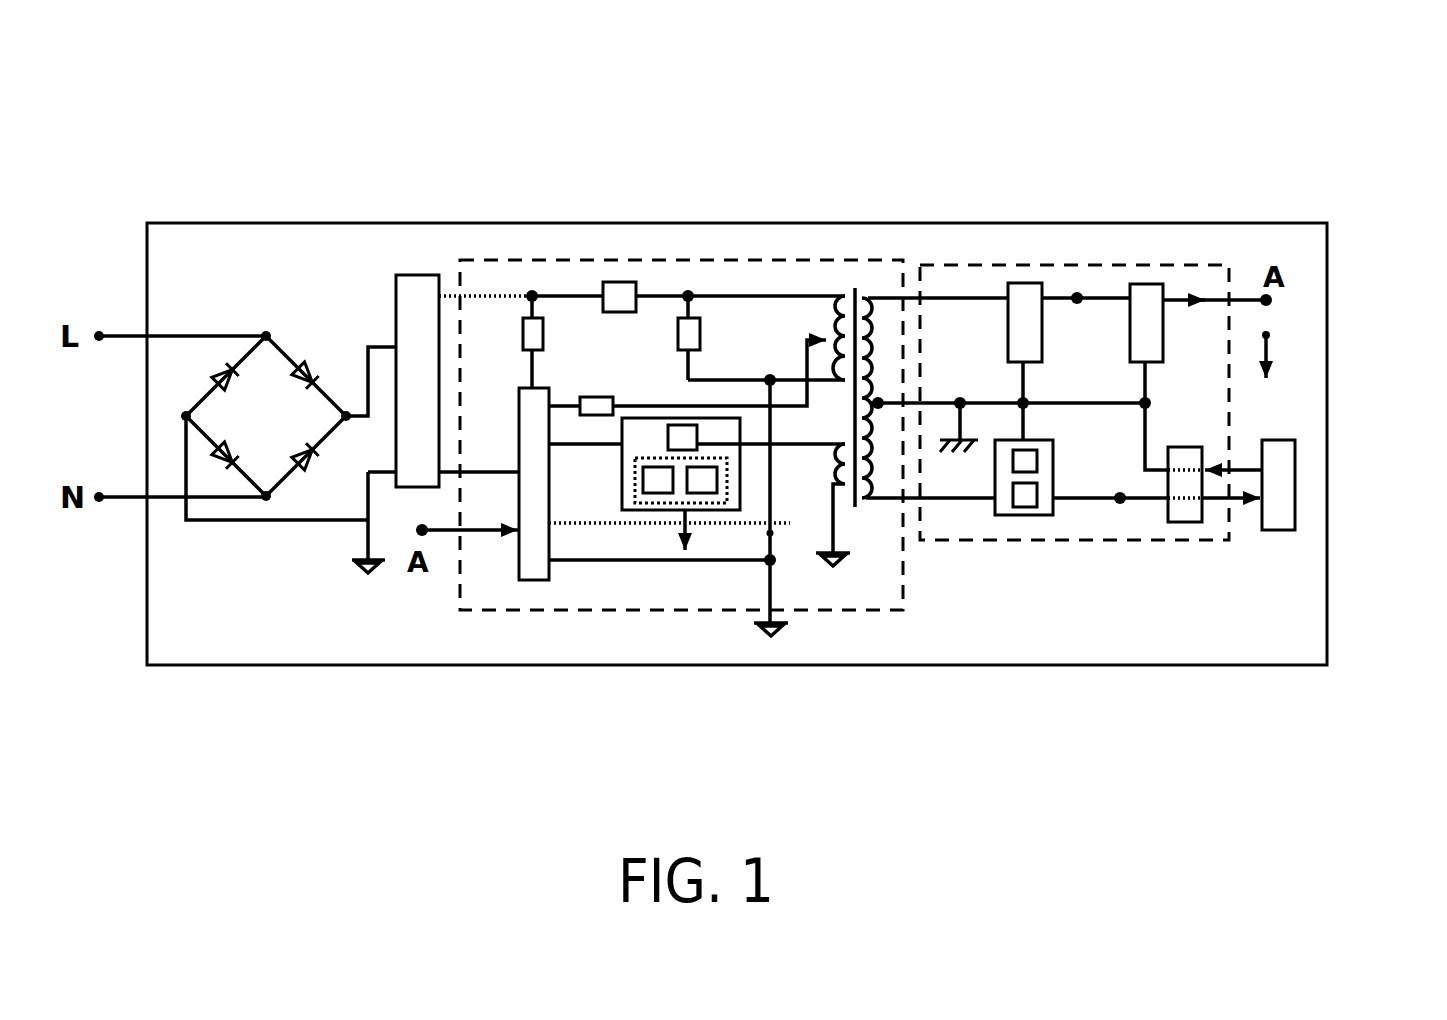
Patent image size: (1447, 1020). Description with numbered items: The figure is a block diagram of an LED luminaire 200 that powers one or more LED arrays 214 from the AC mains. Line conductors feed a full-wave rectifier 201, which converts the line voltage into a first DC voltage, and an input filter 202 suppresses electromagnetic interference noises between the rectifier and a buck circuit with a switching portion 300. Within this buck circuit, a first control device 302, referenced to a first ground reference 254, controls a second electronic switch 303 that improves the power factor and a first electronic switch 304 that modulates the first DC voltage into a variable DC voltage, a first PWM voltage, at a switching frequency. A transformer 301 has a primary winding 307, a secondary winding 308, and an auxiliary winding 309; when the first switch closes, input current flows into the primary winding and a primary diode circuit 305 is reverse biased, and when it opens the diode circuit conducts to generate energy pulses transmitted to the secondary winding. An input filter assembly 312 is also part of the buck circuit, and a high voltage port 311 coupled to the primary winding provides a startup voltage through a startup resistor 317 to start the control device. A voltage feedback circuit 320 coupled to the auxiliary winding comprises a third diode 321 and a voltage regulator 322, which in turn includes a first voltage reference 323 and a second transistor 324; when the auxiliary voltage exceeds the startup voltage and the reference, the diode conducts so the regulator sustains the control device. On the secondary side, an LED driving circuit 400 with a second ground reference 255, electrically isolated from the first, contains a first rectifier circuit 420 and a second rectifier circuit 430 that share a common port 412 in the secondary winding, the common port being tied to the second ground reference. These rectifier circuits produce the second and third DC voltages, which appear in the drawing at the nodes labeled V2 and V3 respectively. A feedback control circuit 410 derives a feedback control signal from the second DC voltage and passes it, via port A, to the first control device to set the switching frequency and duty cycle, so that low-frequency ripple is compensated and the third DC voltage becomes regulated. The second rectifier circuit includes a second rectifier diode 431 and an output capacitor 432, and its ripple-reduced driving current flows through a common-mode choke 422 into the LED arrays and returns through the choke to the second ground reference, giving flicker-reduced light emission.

The LED luminaire 200 is at (478, 214).
The full-wave rectifier 201 is at (236, 318).
The input filter 202 is at (412, 273).
The first ground reference 254 is at (363, 572).
The second ground reference 255 is at (958, 454).
The buck circuit with a switching portion 300 is at (546, 250).
The transformer 301 is at (857, 283).
The first control device 302 is at (517, 582).
The second electronic switch 303 is at (522, 320).
The first electronic switch 304 is at (768, 482).
The primary diode circuit 305 is at (701, 317).
The primary winding 307 is at (843, 322).
The secondary winding 308 is at (873, 318).
The auxiliary winding 309 is at (840, 478).
The high voltage port 311 is at (830, 335).
The input filter assembly 312 is at (621, 281).
The startup resistor 317 is at (599, 395).
The voltage feedback circuit 320 is at (647, 511).
The third diode 321 is at (700, 441).
The voltage regulator 322 is at (634, 461).
The first voltage reference 323 is at (707, 508).
The second transistor 324 is at (640, 522).
The LED driving circuit 400 is at (1233, 260).
The feedback control circuit 410 is at (1165, 280).
The common port 412 is at (880, 412).
The first rectifier circuit 420 is at (1023, 281).
The common-mode choke 422 is at (1203, 523).
The second rectifier circuit 430 is at (1018, 519).
The second rectifier diode 431 is at (1037, 508).
The output capacitor 432 is at (1034, 447).
The LED arrays 214 is at (1297, 520).
The voltage node V2 is at (1078, 297).
The voltage node V3 is at (1122, 500).